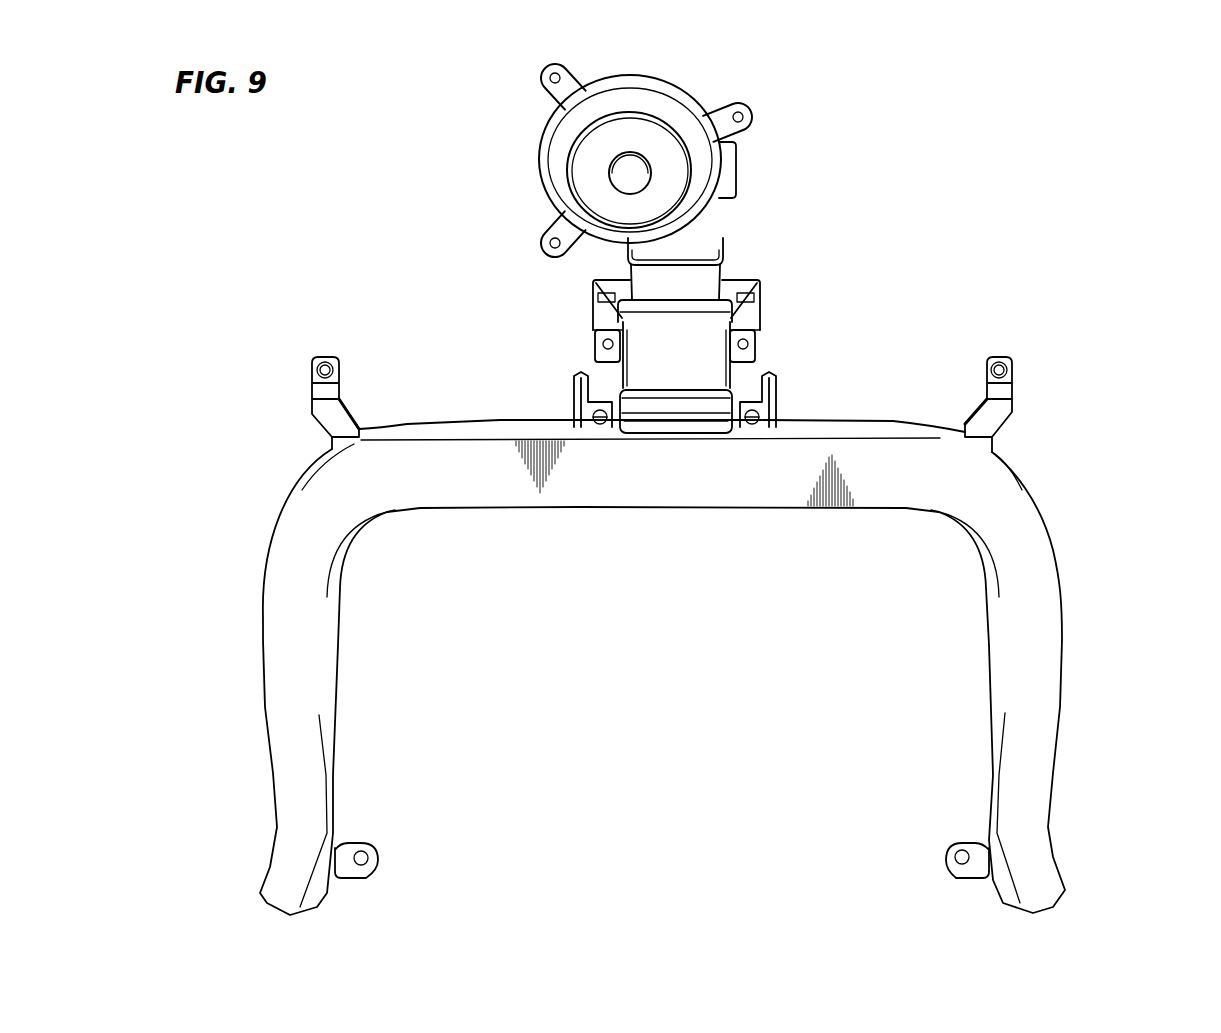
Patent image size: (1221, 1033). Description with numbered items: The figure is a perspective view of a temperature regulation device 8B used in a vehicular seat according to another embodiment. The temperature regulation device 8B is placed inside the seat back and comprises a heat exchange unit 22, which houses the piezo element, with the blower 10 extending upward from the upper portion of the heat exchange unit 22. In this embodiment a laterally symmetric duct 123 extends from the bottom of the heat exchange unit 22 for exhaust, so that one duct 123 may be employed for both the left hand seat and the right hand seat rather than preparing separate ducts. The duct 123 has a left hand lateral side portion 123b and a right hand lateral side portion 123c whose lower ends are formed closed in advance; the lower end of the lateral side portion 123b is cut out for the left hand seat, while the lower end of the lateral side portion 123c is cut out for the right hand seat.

The temperature regulation device 8B is at (701, 84).
The blower 10 is at (678, 168).
The heat exchange unit 22 is at (693, 358).
The laterally symmetric duct 123 is at (893, 419).
The lateral side portion 123b is at (291, 697).
The lateral side portion 123c is at (1040, 738).